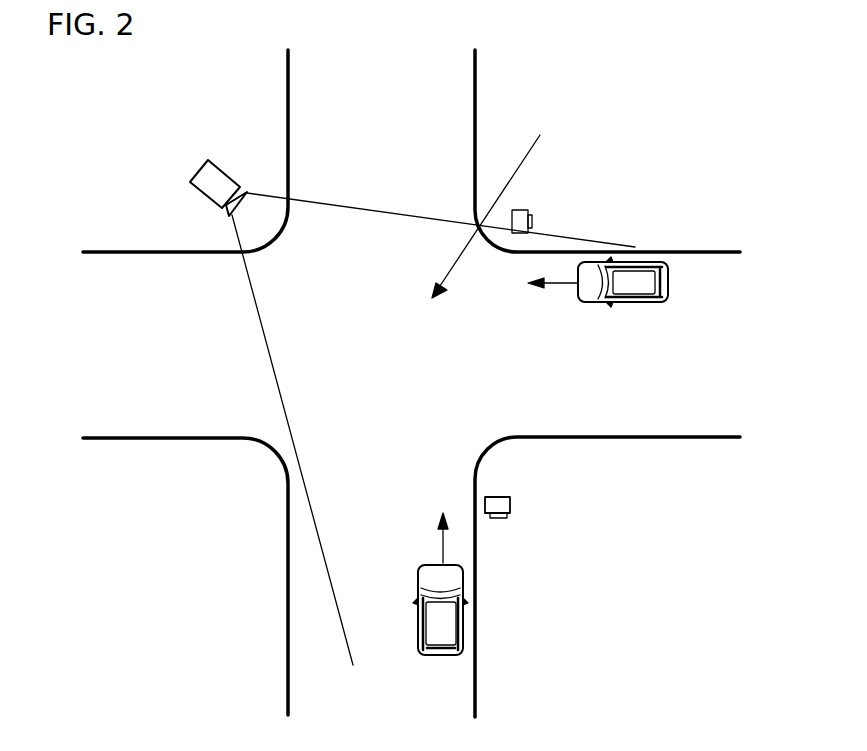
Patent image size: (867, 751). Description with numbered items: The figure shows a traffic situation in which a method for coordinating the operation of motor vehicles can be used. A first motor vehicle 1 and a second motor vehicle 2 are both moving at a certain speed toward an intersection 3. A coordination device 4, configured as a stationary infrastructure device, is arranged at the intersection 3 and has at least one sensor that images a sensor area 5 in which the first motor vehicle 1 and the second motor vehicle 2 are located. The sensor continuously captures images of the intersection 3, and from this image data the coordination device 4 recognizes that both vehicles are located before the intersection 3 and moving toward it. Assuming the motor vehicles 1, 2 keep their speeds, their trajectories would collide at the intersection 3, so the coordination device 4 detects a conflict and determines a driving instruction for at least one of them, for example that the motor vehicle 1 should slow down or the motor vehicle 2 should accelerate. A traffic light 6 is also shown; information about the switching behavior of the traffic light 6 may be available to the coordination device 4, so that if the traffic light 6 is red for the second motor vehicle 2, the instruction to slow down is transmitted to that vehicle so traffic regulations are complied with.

The first motor vehicle 1 is at (668, 283).
The second motor vehicle 2 is at (440, 657).
The intersection 3 is at (490, 203).
The coordination device 4 is at (223, 173).
The sensor area 5 is at (384, 212).
The traffic light 6 is at (510, 503).